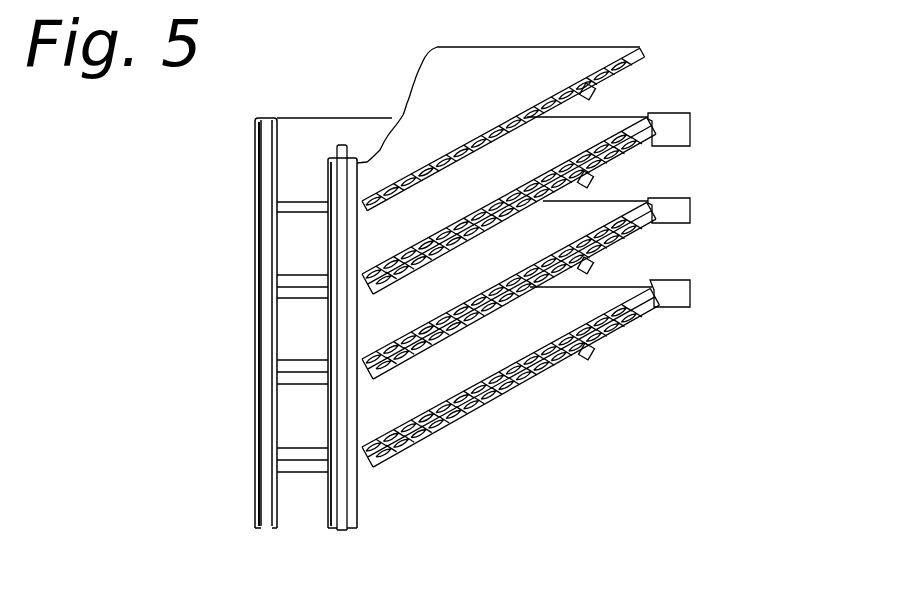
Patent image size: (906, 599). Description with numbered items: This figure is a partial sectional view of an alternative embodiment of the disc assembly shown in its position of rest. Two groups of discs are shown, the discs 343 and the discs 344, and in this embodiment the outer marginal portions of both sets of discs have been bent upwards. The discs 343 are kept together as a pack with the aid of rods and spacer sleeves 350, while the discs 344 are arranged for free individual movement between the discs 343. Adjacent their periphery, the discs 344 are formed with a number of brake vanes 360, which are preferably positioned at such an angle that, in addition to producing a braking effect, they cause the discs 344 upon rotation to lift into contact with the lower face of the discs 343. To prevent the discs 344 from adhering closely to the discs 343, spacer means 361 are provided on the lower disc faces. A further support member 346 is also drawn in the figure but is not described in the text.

The discs 343 is at (500, 396).
The discs 344 is at (583, 322).
The support post 346 is at (358, 488).
The spacer sleeves 350 is at (327, 425).
The brake vanes 360 is at (680, 297).
The spacer means 361 is at (592, 177).